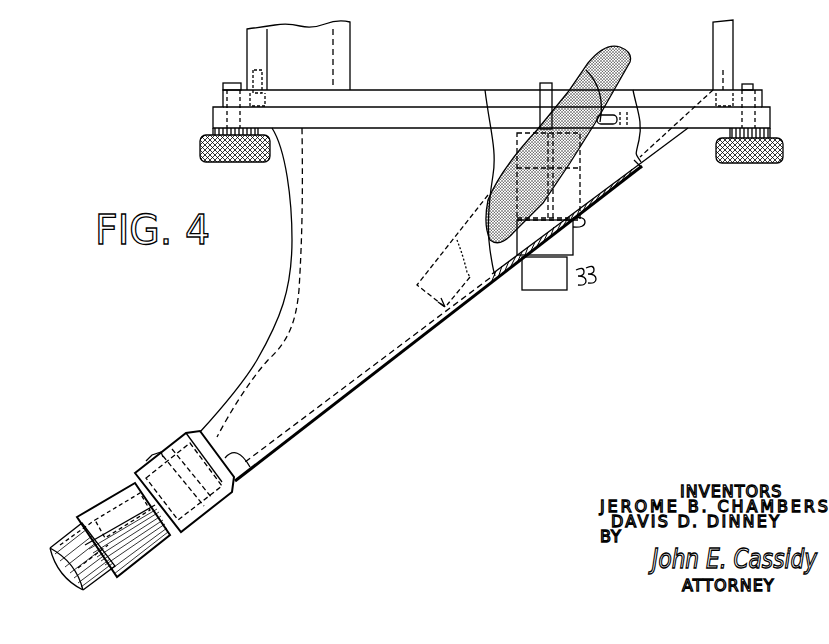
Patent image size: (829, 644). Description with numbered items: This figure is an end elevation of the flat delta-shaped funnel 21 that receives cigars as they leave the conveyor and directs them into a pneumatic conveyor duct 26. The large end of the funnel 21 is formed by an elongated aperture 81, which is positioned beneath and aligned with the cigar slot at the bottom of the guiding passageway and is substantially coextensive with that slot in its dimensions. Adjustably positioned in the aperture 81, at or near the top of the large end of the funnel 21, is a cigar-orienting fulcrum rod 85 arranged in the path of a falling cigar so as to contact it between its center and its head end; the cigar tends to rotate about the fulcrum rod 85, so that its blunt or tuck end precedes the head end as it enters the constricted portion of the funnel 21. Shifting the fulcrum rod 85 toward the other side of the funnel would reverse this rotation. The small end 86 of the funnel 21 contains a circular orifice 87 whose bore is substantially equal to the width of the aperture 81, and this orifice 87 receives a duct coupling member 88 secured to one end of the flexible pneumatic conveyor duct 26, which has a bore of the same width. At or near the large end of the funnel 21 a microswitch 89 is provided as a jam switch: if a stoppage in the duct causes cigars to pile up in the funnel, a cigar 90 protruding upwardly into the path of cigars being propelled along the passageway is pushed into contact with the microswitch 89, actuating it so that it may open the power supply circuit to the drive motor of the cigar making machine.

The flat delta-shaped funnel 21 is at (283, 307).
The conveyor duct 26 is at (75, 543).
The elongated aperture 81 is at (771, 118).
The cigar-orienting fulcrum rod 85 is at (597, 125).
The small end of funnel 86 is at (175, 437).
The circular orifice 87 is at (250, 467).
The duct coupling member 88 is at (136, 484).
The microswitch 89 is at (568, 246).
The cigar 90 is at (619, 48).